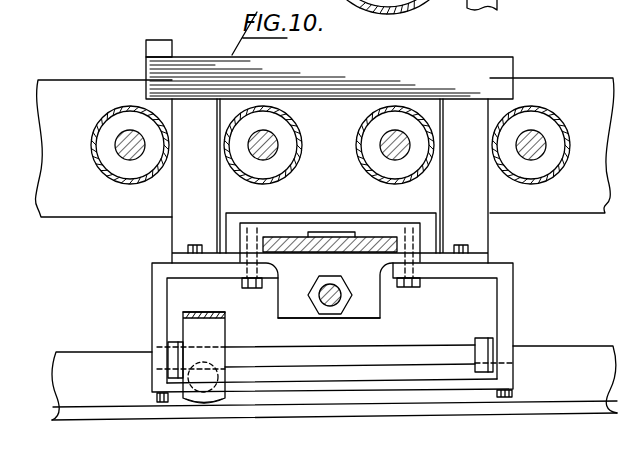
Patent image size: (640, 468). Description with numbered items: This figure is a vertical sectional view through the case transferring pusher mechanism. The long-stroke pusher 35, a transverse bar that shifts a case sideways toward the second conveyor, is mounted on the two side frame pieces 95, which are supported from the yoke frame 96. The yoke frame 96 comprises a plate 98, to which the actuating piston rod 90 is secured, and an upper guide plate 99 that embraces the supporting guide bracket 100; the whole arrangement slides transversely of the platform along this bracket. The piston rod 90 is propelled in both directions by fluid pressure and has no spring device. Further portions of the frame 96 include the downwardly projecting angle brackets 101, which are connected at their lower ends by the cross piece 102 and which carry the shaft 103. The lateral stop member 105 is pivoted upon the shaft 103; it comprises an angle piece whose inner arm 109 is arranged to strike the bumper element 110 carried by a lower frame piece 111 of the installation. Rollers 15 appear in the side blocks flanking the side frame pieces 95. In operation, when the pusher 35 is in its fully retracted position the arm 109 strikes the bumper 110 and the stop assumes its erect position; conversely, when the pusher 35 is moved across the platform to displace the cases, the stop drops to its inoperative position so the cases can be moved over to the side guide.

The roller 15 is at (104, 118).
The pusher member 35 is at (430, 42).
The piston rod 90 is at (330, 306).
The side frame pieces 95 is at (187, 192).
The yoke frame 96 is at (511, 252).
The plate 98 is at (293, 283).
The upper guide plate 99 is at (274, 230).
The supporting guide bracket 100 is at (335, 232).
The angle brackets 101 is at (160, 308).
The cross piece 102 is at (365, 386).
The shaft 103 is at (417, 338).
The lateral stop member 105 is at (200, 323).
The inner arm 109 is at (213, 356).
The bumper element 110 is at (203, 400).
The lower frame piece 111 is at (70, 381).